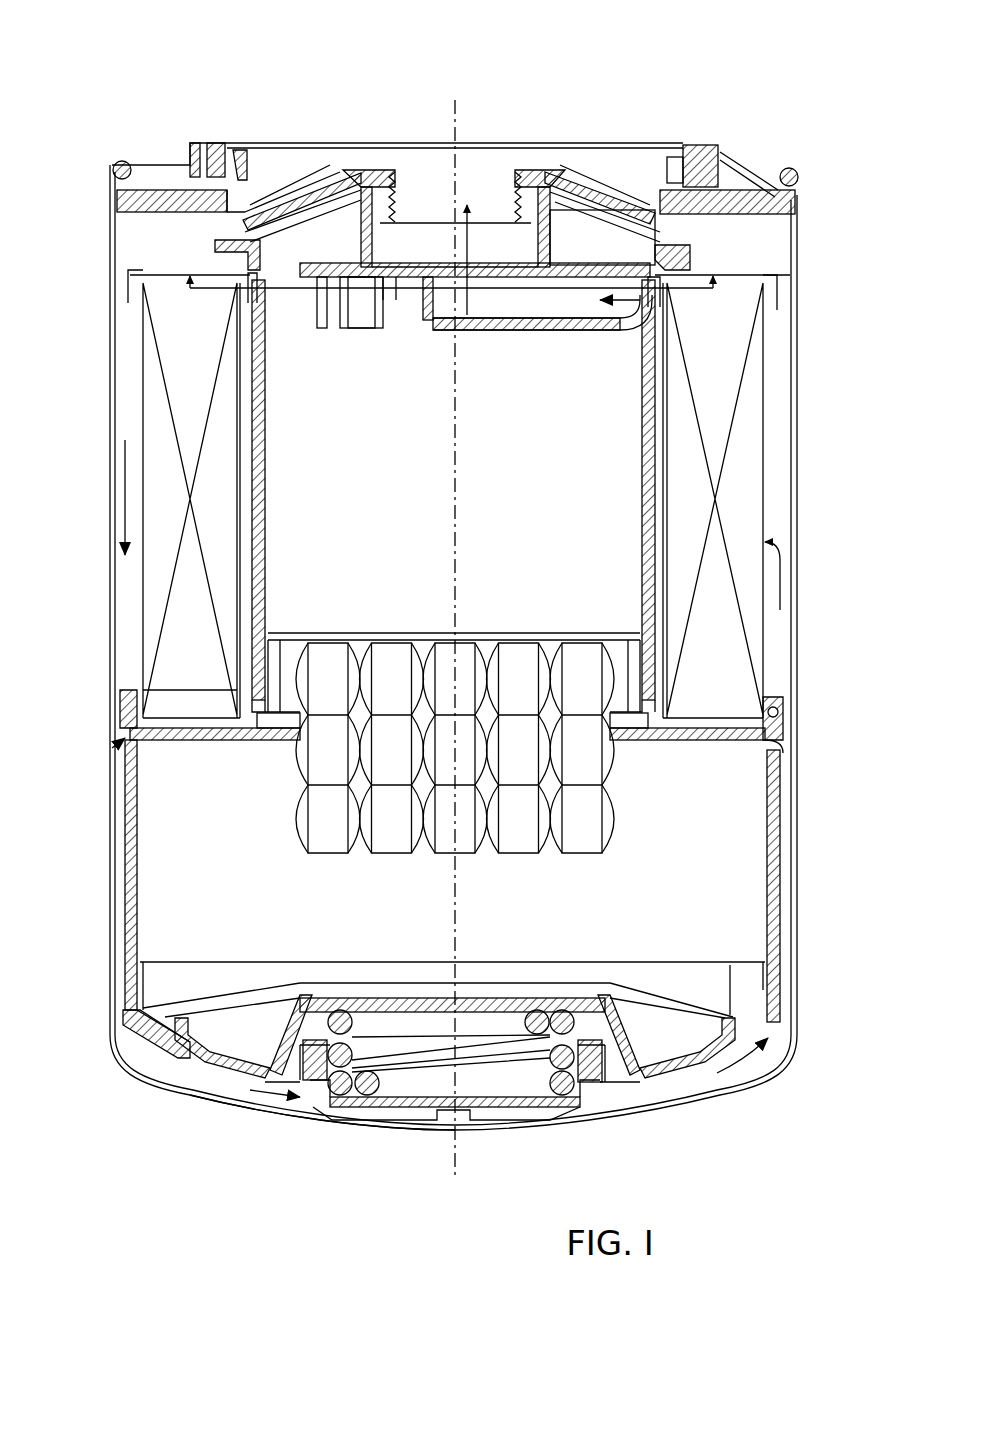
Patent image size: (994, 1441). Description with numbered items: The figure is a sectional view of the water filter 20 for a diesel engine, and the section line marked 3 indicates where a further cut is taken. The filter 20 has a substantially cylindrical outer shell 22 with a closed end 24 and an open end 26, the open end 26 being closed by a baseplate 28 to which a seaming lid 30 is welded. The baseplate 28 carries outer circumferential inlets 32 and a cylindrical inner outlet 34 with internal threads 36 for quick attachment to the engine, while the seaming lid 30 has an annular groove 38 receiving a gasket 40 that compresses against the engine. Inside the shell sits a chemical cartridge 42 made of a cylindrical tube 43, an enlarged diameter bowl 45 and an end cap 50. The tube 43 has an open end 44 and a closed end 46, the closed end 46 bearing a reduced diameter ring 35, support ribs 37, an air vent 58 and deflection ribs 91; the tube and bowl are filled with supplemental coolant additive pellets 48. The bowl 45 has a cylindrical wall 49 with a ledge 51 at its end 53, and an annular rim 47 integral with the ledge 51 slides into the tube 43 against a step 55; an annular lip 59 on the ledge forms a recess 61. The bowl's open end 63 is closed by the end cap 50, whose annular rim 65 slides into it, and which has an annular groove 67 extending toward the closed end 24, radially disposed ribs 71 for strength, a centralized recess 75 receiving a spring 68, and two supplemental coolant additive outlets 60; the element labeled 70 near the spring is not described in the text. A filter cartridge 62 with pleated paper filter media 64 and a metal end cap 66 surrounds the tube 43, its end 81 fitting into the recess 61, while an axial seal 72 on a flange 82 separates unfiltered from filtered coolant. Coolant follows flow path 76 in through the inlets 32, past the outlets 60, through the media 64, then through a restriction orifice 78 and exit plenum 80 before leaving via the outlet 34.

The filter 20 is at (650, 72).
The outer shell 22 is at (800, 390).
The closed end 24 is at (315, 1125).
The open end 26 is at (140, 135).
The baseplate 28 is at (120, 228).
The seaming lid 30 is at (705, 148).
The inlets 32 is at (285, 200).
The outlet 34 is at (500, 175).
The reduced diameter ring 35 is at (545, 236).
The internal threads 36 is at (455, 197).
The support ribs 37 is at (560, 148).
The annular groove 38 is at (203, 142).
The gasket 40 is at (226, 160).
The chemical cartridge 42 is at (720, 258).
The cylindrical tube 43 is at (262, 488).
The open end 44 is at (640, 605).
The bowl 45 is at (778, 850).
The closed end 46 is at (400, 300).
The annular rim 47 is at (305, 625).
The supplemental coolant additive pellets 48 is at (325, 835).
The cylindrical wall 49 is at (135, 820).
The end cap 50 is at (165, 1040).
The ledge 51 is at (180, 730).
The end 53 is at (118, 745).
The step 55 is at (640, 710).
The air vent 58 is at (300, 283).
The annular lip 59 is at (125, 706).
The supplemental coolant additive outlets 60 is at (210, 1050).
The recess 61 is at (785, 720).
The filter cartridge 62 is at (768, 437).
The open end 63 is at (128, 995).
The pleated paper filter media 64 is at (735, 495).
The annular rim 65 is at (165, 975).
The metal end cap 66 is at (795, 275).
The annular groove 67 is at (270, 1062).
The spring 68 is at (540, 1050).
The spring retainer 70 is at (400, 1110).
The radially disposed ribs 71 is at (620, 1002).
The axial seal 72 is at (220, 262).
The centralized recess 75 is at (630, 1100).
The flow path 76 is at (322, 220).
The restriction orifice 78 is at (440, 265).
The exit plenum 80 is at (535, 300).
The end 81 is at (150, 677).
The flange 82 is at (675, 262).
The deflection ribs 91 is at (340, 300).
The section line 3- 3 is at (447, 306).